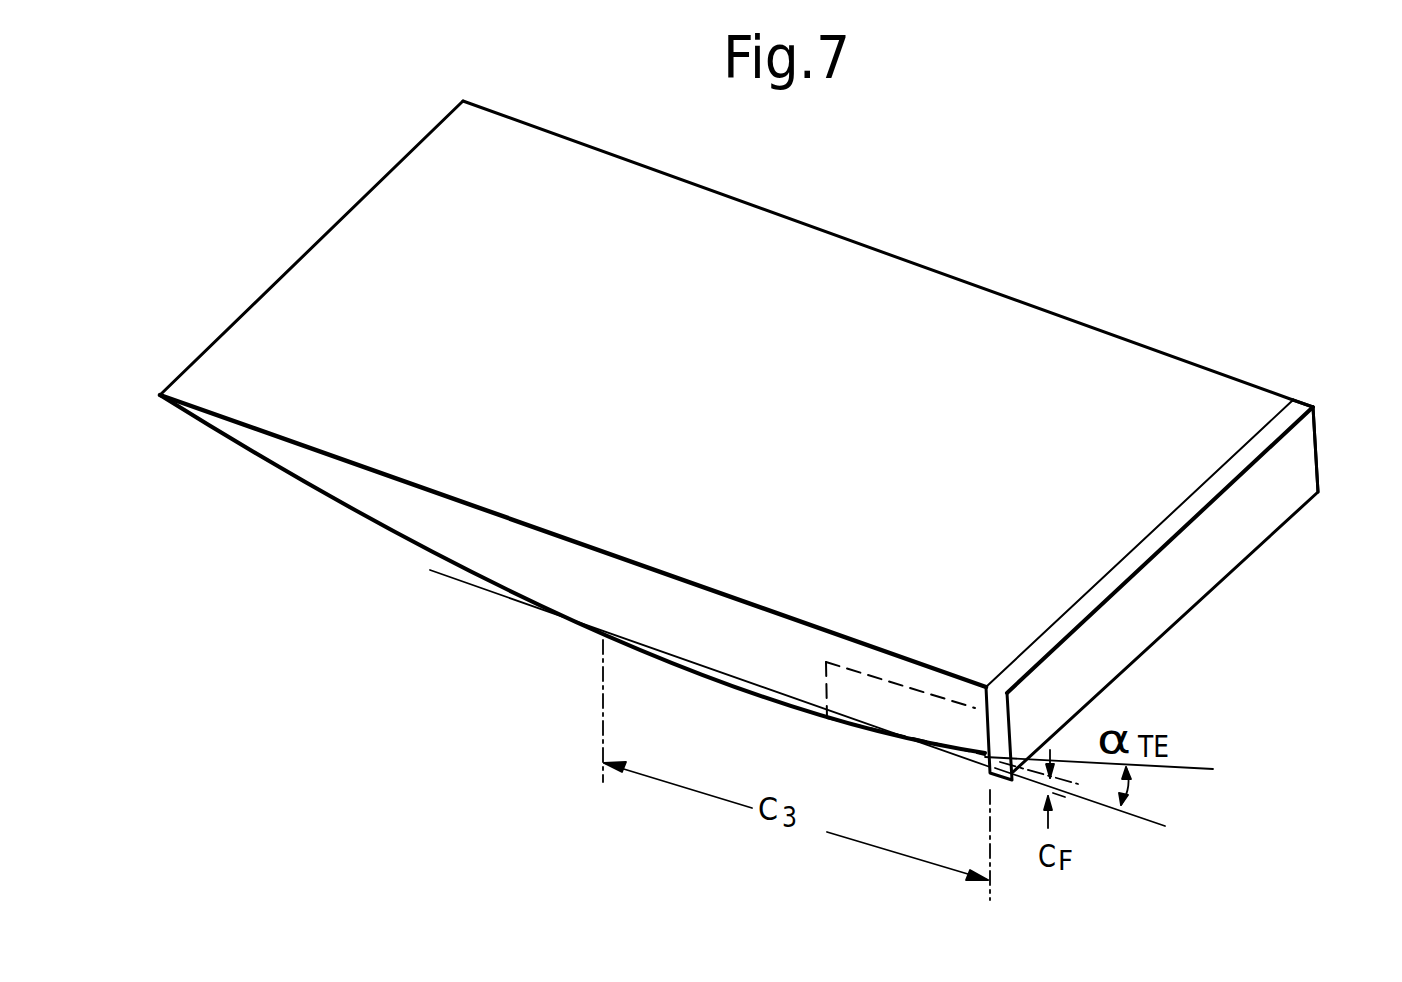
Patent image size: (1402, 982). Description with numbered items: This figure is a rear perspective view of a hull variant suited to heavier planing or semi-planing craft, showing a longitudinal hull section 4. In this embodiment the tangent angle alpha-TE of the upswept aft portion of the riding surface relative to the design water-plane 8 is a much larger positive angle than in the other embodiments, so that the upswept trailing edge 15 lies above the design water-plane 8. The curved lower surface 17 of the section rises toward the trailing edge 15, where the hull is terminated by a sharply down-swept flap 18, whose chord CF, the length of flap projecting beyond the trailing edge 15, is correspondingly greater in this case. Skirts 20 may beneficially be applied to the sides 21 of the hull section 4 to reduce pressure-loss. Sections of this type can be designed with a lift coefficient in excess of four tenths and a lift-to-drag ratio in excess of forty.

The longitudinal hull section 4 is at (1070, 357).
The sides of the hull section 21 is at (952, 275).
The flap 18 is at (1293, 474).
The upswept trailing edge 15 is at (983, 752).
The curved lower surface 17 is at (748, 695).
The skirts 20 is at (915, 750).
The design water-plane 8 is at (1148, 815).